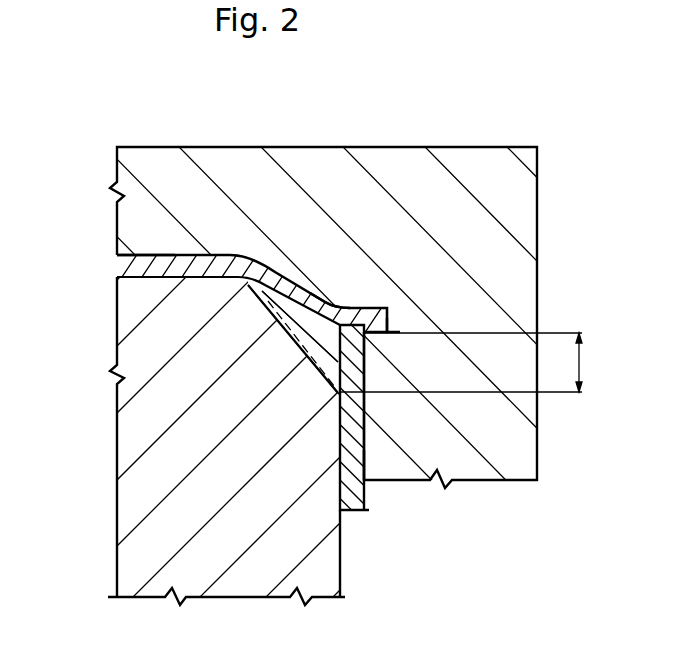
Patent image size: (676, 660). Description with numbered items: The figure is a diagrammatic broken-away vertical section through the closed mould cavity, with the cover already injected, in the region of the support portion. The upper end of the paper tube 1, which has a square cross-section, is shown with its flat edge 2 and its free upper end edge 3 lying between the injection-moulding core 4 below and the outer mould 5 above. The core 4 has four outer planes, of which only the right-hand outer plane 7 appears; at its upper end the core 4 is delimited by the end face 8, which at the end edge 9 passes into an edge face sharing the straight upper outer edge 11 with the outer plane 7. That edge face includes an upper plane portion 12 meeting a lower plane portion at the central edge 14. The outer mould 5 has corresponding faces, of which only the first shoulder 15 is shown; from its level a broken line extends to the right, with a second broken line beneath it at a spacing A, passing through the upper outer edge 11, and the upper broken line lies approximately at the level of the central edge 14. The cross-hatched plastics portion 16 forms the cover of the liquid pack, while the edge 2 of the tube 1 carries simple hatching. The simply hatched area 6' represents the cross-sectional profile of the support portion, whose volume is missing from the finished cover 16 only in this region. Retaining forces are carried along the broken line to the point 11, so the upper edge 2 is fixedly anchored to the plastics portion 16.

The paper tube 1 is at (361, 517).
The flat edge of the paper tube 2 is at (355, 462).
The free upper end edge 3 is at (353, 326).
The injection-moulding core 4 is at (195, 482).
The outer mould 5 is at (251, 172).
The cross-sectional profile of the support portion 6' is at (339, 192).
The outer plane 7 is at (345, 598).
The end face 8 is at (125, 270).
The end edge 9 is at (255, 283).
The upper outer edge 11 is at (340, 393).
The upper plane portion 12 is at (285, 295).
The central edge 14 is at (316, 336).
The first shoulder 15 is at (390, 333).
The plastics portion 16 is at (156, 263).
The spacing A is at (471, 362).